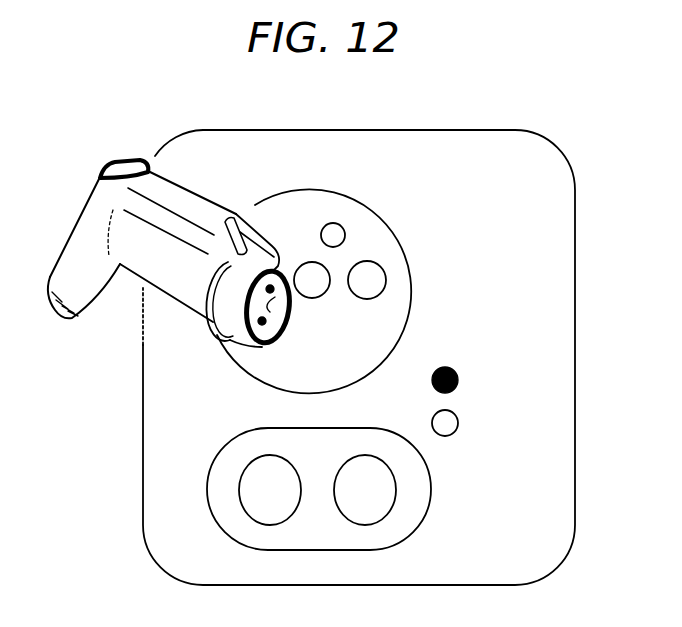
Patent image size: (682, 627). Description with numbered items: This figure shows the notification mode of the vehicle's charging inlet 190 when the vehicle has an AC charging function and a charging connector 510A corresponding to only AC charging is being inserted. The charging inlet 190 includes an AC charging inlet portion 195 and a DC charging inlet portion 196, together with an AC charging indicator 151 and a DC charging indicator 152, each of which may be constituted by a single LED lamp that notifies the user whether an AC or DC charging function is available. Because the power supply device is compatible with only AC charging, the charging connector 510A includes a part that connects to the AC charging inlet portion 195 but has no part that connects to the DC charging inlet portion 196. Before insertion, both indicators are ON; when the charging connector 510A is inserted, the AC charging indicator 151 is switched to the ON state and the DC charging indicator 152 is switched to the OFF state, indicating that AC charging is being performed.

The charging inlet 190 is at (490, 129).
The AC charging inlet portion 195 is at (297, 348).
The DC charging inlet portion 196 is at (233, 503).
The AC charging indicator 151 is at (458, 374).
The DC charging indicator 152 is at (456, 431).
The charging connector 510A is at (80, 233).